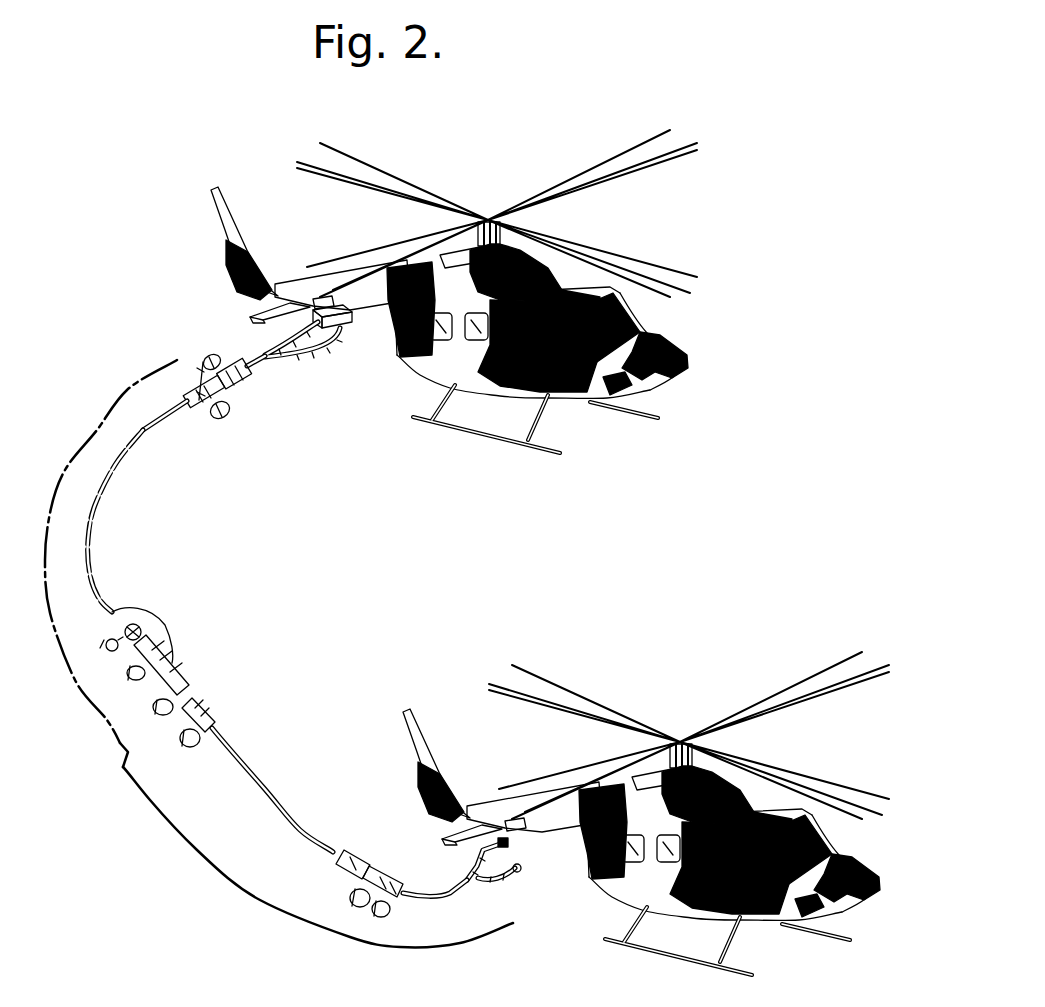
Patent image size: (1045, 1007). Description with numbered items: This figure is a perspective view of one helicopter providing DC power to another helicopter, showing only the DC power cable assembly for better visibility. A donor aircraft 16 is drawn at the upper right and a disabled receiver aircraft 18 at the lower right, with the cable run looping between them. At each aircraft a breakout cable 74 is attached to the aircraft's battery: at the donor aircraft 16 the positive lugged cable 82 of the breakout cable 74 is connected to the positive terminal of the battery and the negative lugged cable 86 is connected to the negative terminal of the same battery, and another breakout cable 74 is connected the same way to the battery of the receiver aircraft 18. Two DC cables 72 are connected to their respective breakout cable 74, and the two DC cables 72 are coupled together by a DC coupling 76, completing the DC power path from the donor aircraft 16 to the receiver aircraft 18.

The donor aircraft 16 is at (454, 282).
The receiver aircraft 18 is at (646, 813).
The DC cable 72 is at (97, 543).
The breakout cable 74 is at (260, 353).
The DC coupling 76 is at (177, 665).
The positive lugged cable 82 is at (327, 335).
The negative lugged cable 86 is at (313, 322).